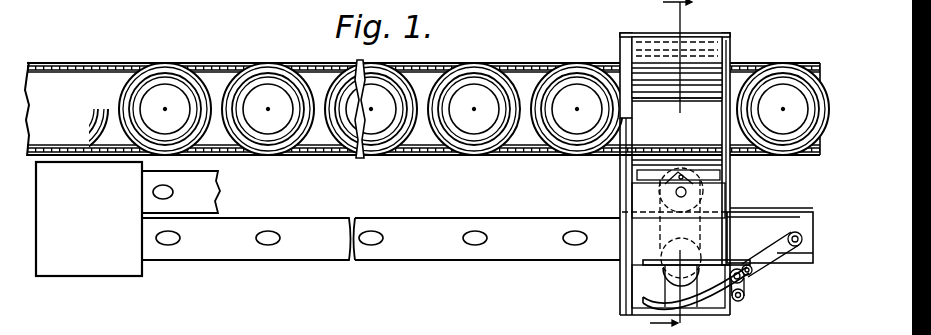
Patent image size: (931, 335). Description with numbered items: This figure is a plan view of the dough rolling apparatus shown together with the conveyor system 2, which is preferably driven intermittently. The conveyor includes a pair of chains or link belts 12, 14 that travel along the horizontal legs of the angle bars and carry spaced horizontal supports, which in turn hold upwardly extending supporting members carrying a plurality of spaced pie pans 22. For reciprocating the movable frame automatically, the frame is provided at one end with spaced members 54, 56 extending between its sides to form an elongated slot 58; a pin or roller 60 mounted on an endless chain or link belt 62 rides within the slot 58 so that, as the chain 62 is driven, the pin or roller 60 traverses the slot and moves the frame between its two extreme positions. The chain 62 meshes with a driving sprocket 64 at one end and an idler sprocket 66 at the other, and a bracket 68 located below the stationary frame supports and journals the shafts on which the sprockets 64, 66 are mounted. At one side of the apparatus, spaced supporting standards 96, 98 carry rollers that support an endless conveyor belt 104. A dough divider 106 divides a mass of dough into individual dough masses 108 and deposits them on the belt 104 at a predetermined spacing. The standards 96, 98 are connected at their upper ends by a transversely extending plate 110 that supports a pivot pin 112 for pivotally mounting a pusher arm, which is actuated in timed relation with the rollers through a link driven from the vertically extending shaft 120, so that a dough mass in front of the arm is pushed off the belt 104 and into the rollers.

The conveyor system 2 is at (228, 55).
The chain or link belt 12 is at (312, 70).
The chain or link belt 14 is at (318, 155).
The pie pan 22 is at (455, 150).
The spaced member 54 is at (722, 166).
The spaced member 56 is at (715, 185).
The elongated slot 58 is at (643, 177).
The pin or roller 60 is at (665, 180).
The chain or link belt 62 is at (653, 236).
The driving sprocket 64 is at (653, 218).
The idler sprocket 66 is at (700, 262).
The bracket 68 is at (718, 312).
The supporting standard 96 is at (762, 212).
The supporting standard 98 is at (773, 268).
The conveyor belt 104 is at (323, 262).
The dough divider 106 is at (93, 272).
The dough masses 108 is at (262, 243).
The transversely extending plate 110 is at (802, 220).
The pivot pin 112 is at (790, 237).
The shaft 120 is at (752, 281).